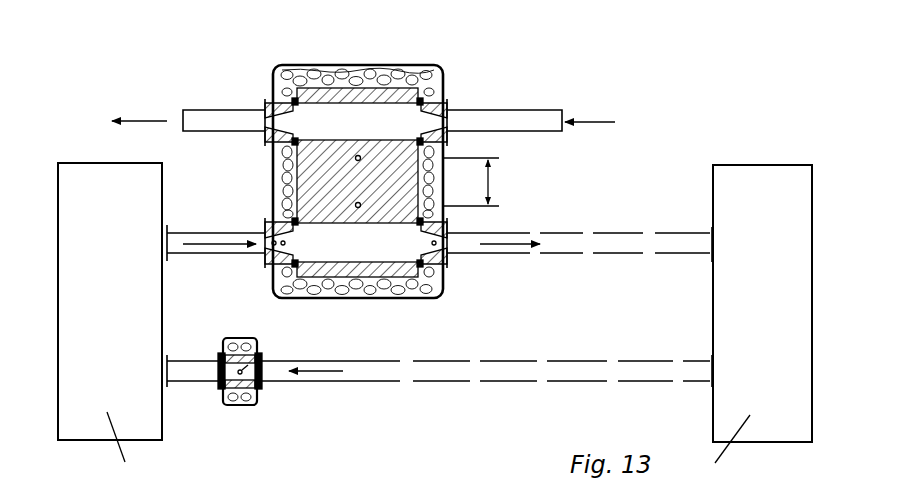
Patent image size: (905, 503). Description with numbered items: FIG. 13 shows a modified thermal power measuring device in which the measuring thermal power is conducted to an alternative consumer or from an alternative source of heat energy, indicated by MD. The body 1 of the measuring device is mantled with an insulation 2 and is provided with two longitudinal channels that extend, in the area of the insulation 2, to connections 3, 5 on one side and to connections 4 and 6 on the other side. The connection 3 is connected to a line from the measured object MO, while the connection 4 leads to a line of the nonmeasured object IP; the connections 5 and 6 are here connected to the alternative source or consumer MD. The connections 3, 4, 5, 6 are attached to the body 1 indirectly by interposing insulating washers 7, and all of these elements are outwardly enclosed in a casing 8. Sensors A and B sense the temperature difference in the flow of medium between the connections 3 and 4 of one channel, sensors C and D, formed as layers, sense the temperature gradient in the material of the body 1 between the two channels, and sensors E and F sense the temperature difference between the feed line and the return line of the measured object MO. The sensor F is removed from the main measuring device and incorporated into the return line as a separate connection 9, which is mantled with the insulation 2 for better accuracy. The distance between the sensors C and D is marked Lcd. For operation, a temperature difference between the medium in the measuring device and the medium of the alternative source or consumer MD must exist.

The body 1 is at (315, 175).
The insulation 2 is at (395, 86).
The connection 3 is at (270, 258).
The connection 4 is at (447, 258).
The connection 5 is at (270, 102).
The connection 6 is at (448, 102).
The insulating washer 7 is at (275, 70).
The casing 8 is at (377, 70).
The connection with sensor F 9 is at (239, 394).
The sensor A is at (265, 228).
The sensor B is at (460, 231).
The sensor C is at (357, 155).
The sensor D is at (359, 208).
The sensor E is at (272, 220).
The sensor F is at (255, 357).
The measured object MO is at (92, 182).
The nonmeasured object IP is at (755, 190).
The alternative source or consumer of thermal power MD is at (363, 110).
The distance between C and D Lcd is at (471, 182).